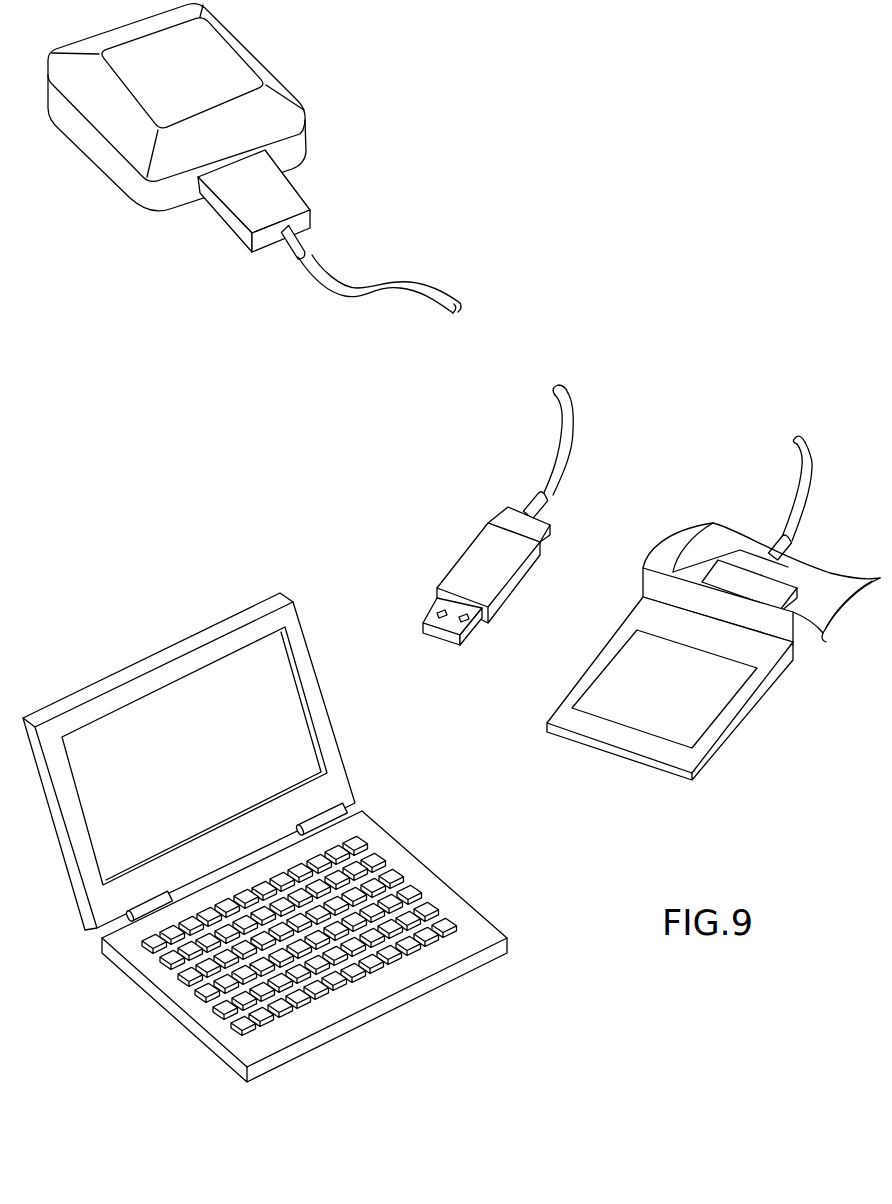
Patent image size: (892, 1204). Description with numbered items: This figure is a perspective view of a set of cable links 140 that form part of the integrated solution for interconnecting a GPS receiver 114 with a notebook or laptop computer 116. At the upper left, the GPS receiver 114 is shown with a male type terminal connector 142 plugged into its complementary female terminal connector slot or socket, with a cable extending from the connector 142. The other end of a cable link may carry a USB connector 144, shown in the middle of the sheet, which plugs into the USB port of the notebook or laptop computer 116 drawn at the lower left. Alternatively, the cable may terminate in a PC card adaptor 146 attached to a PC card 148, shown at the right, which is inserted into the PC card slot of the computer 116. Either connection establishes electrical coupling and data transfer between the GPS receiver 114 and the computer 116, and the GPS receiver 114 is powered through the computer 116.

The GPS receiver 114 is at (237, 33).
The male type terminal connector 142 is at (298, 198).
The cable links 140 is at (355, 462).
The notebook or laptop computer 116 is at (192, 647).
The USB connector 144 is at (455, 576).
The PC card adaptor 146 is at (673, 538).
The PC card 148 is at (707, 720).